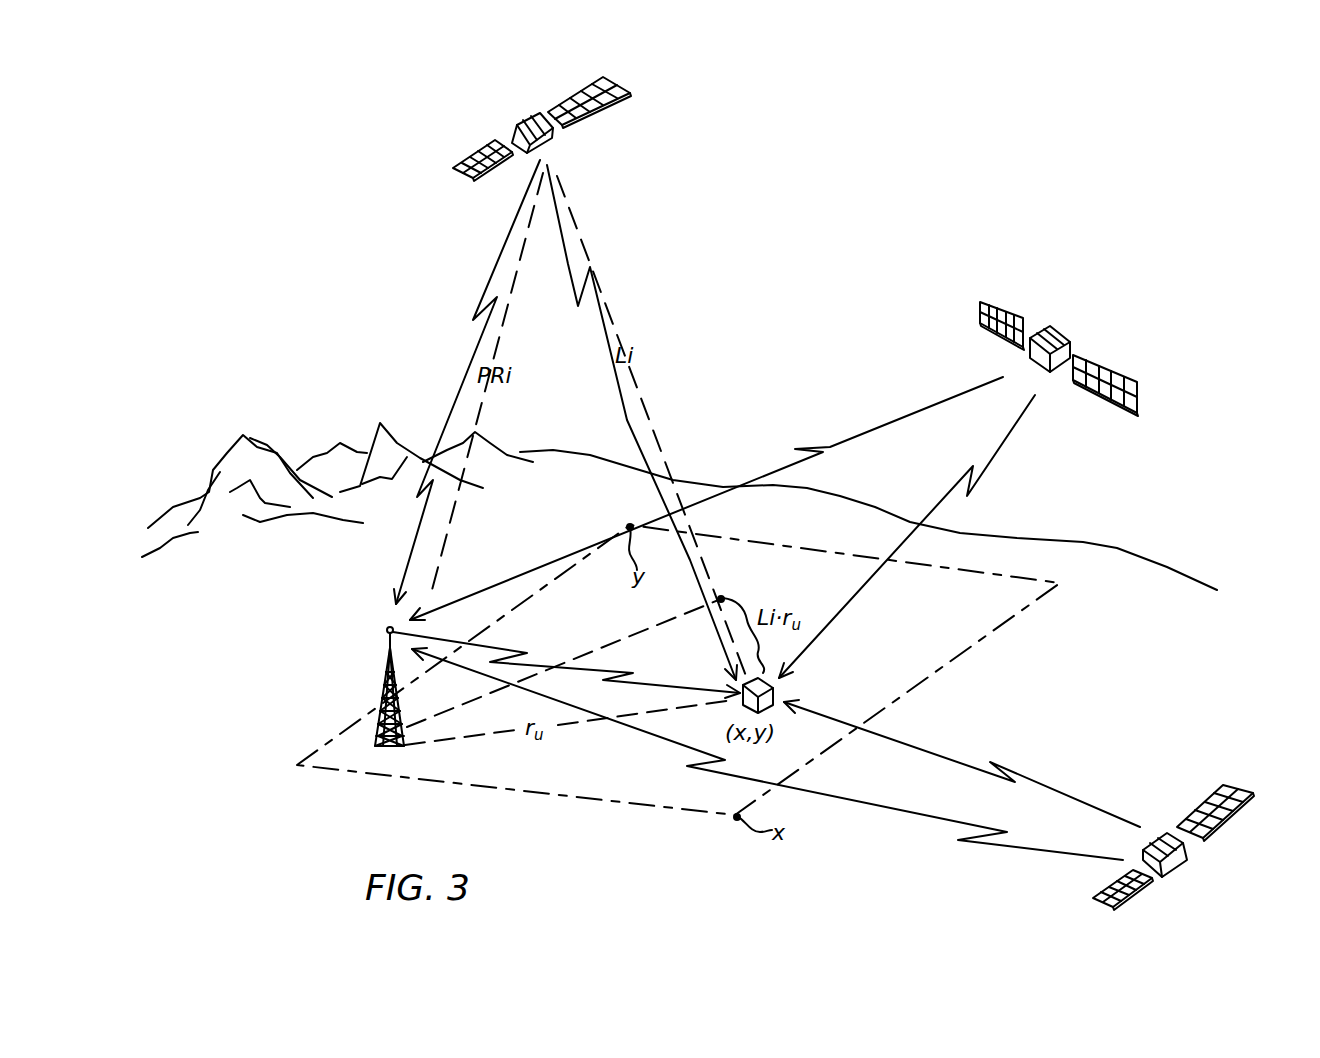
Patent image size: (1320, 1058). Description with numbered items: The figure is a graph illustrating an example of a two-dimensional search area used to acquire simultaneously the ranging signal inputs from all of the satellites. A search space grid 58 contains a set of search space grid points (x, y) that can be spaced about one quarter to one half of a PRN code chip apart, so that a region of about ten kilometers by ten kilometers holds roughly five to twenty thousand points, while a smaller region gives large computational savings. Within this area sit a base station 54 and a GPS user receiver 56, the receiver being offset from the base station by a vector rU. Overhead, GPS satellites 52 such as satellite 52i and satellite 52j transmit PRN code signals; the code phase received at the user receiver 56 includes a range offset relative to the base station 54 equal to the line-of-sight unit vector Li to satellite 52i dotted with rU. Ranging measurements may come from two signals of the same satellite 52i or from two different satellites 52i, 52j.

The satellite 52i is at (512, 132).
The satellite 52j is at (1058, 338).
The GPS satellite 52 is at (1170, 848).
The base station 54 is at (383, 683).
The GPS user receiver 56 is at (780, 690).
The search space grid 58 is at (975, 650).